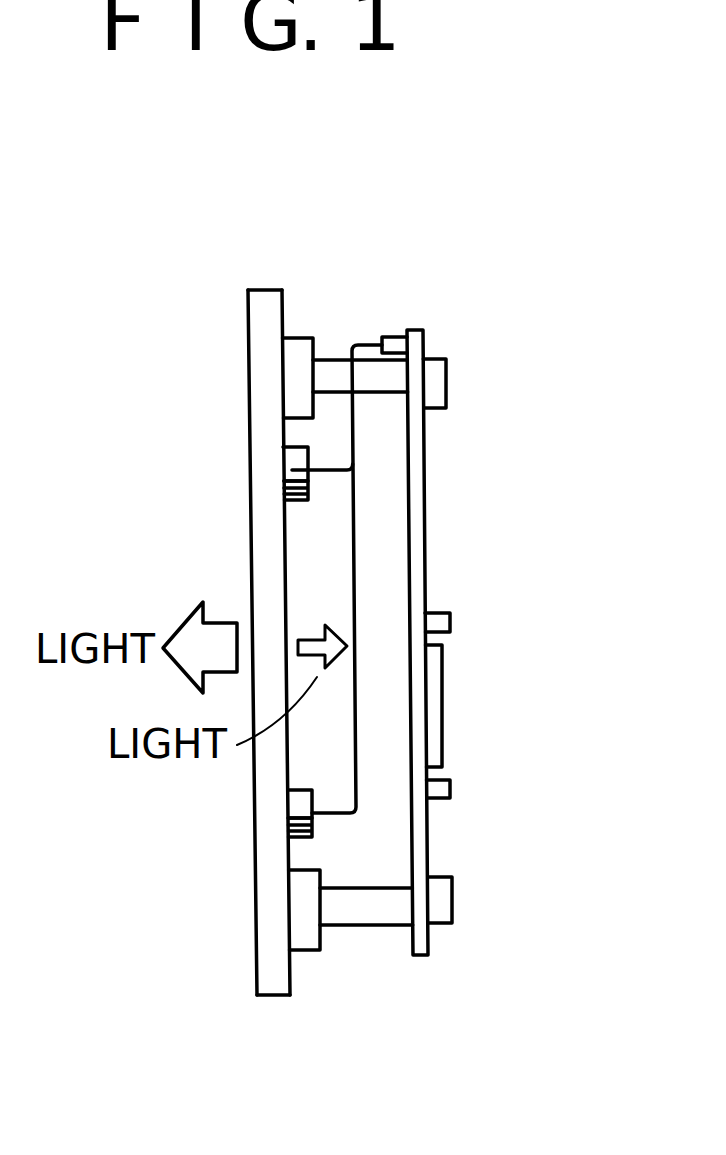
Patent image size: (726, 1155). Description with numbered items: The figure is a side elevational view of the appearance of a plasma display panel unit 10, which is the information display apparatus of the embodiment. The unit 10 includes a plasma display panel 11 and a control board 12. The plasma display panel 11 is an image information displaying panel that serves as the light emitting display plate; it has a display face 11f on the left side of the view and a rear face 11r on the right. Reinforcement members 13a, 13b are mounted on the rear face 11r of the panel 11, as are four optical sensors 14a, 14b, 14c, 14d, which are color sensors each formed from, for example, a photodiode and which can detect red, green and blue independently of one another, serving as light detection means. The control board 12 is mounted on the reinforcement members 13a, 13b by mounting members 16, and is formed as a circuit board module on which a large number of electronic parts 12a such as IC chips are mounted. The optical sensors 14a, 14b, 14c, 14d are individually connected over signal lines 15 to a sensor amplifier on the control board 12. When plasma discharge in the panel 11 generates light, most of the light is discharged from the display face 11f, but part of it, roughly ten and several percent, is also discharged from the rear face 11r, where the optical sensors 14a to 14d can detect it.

The plasma display panel unit 10 is at (475, 293).
The plasma display panel 11 is at (258, 970).
The display face 11f is at (248, 318).
The rear face 11r is at (282, 290).
The control board 12 is at (477, 952).
The electronic parts 12a is at (435, 713).
The reinforcement member 13a is at (328, 360).
The reinforcement member 13b is at (310, 953).
The optical sensor 14a is at (292, 463).
The optical sensor 14b is at (296, 490).
The optical sensor 14c is at (287, 827).
The optical sensor 14d is at (300, 827).
The signal lines 15 is at (350, 429).
The mounting members 16 is at (338, 350).